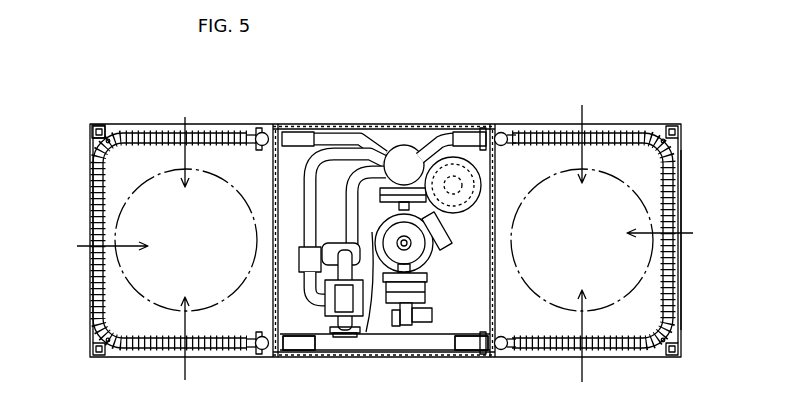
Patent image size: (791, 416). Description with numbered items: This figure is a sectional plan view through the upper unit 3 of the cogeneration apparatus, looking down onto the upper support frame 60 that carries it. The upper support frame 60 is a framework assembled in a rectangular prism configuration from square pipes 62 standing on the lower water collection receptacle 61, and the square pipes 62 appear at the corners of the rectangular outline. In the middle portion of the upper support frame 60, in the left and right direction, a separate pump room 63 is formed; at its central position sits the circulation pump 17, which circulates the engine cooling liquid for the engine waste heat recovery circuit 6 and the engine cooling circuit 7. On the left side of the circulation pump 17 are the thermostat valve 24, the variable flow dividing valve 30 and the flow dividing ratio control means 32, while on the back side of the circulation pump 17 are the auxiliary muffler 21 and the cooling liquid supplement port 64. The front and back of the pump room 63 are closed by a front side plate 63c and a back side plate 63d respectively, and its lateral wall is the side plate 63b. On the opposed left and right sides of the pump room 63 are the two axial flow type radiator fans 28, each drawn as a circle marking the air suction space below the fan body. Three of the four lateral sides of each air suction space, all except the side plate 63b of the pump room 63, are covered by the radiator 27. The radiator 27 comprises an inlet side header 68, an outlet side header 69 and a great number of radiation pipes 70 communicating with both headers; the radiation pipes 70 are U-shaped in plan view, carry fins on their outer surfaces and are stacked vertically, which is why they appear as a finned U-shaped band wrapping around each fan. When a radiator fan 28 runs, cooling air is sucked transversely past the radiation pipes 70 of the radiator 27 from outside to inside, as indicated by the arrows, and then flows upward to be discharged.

The upper unit 3 is at (80, 221).
The engine waste heat recovery circuit 6 is at (404, 326).
The engine cooling circuit 7 is at (329, 121).
The circulation pump 17 is at (428, 259).
The auxiliary muffler 21 is at (470, 119).
The thermostat valve 24 is at (371, 335).
The radiator 27 is at (96, 319).
The radiator fan 28 is at (134, 197).
The variable flow dividing valve 30 is at (343, 305).
The flow dividing ratio control means 32 is at (332, 308).
The upper support frame 60 is at (684, 247).
The lower water collection receptacle 61 is at (543, 341).
The square pipe 62 is at (88, 131).
The pump room 63 is at (384, 240).
The side plate 63b is at (273, 292).
The front side plate 63c is at (432, 353).
The back side plate 63d is at (374, 122).
The cooling liquid supplement port 64 is at (404, 144).
The inlet side header 68 is at (265, 358).
The outlet side header 69 is at (260, 124).
The radiation pipe 70 is at (92, 284).